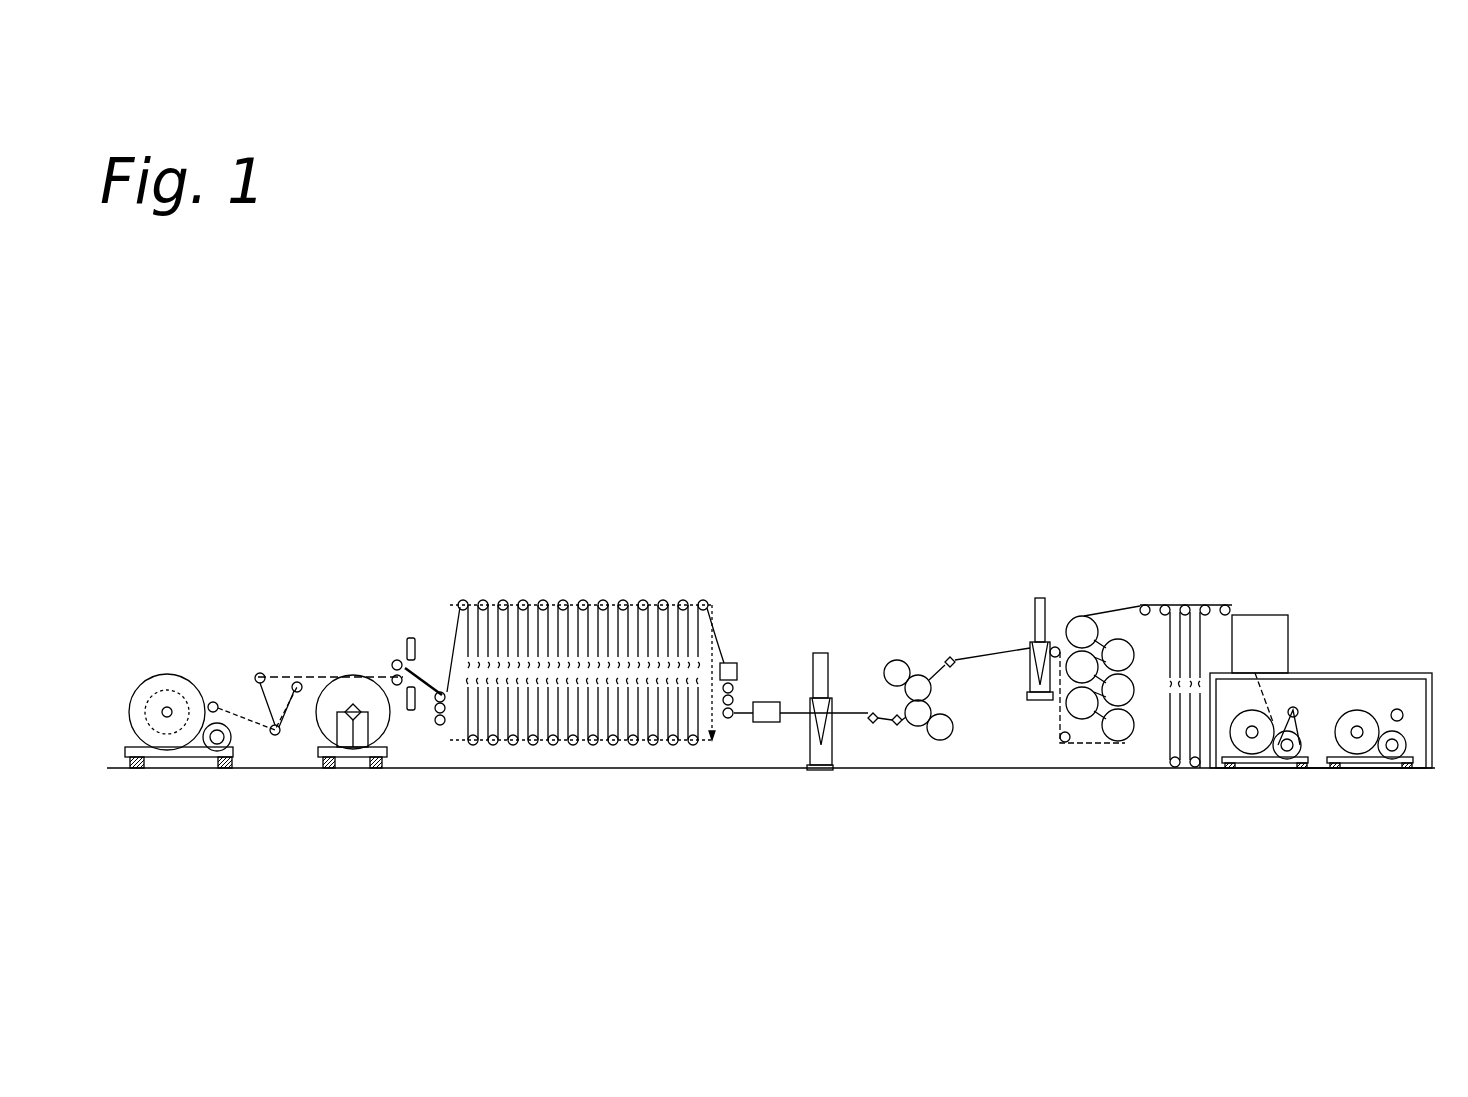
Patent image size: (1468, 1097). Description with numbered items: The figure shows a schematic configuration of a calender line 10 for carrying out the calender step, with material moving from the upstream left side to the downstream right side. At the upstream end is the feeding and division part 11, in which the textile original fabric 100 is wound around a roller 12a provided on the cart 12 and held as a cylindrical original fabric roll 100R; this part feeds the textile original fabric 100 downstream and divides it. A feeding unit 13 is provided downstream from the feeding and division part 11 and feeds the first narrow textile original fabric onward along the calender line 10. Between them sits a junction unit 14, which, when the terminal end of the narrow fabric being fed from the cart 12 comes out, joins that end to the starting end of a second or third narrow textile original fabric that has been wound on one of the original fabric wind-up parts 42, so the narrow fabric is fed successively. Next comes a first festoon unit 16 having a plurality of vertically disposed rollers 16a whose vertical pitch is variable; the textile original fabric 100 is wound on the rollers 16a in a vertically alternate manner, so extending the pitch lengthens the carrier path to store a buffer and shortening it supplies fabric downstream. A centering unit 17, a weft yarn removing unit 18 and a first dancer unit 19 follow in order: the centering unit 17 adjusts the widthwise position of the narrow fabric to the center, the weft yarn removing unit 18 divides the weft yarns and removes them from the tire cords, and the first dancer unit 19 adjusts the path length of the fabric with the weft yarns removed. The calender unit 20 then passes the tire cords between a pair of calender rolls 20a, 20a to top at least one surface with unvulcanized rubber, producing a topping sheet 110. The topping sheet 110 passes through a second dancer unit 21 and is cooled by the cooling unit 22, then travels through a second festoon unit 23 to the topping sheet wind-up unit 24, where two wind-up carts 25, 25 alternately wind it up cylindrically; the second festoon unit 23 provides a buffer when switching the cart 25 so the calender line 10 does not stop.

The calender line 10 is at (628, 480).
The feeding and division part 11 is at (277, 661).
The cart 12 is at (335, 757).
The roller 12a is at (357, 757).
The feeding unit 13 is at (441, 726).
The junction unit 14 is at (409, 636).
The first festoon unit 16 is at (608, 586).
The rollers 16a is at (483, 600).
The centering unit 17 is at (733, 663).
The weft yarn removing unit 18 is at (763, 722).
The first dancer unit 19 is at (830, 692).
The calender unit 20 is at (896, 645).
The calender rolls 20a is at (917, 674).
The second dancer unit 21 is at (1022, 613).
The cooling unit 22 is at (1089, 747).
The second festoon unit 23 is at (1197, 598).
The topping sheet wind-up unit 24 is at (1268, 617).
The wind-up cart 25 is at (1250, 768).
The original fabric wind-up part 42 is at (143, 757).
The textile original fabric 100 is at (447, 660).
The original fabric roll 100R is at (340, 683).
The topping sheet 110 is at (1113, 606).